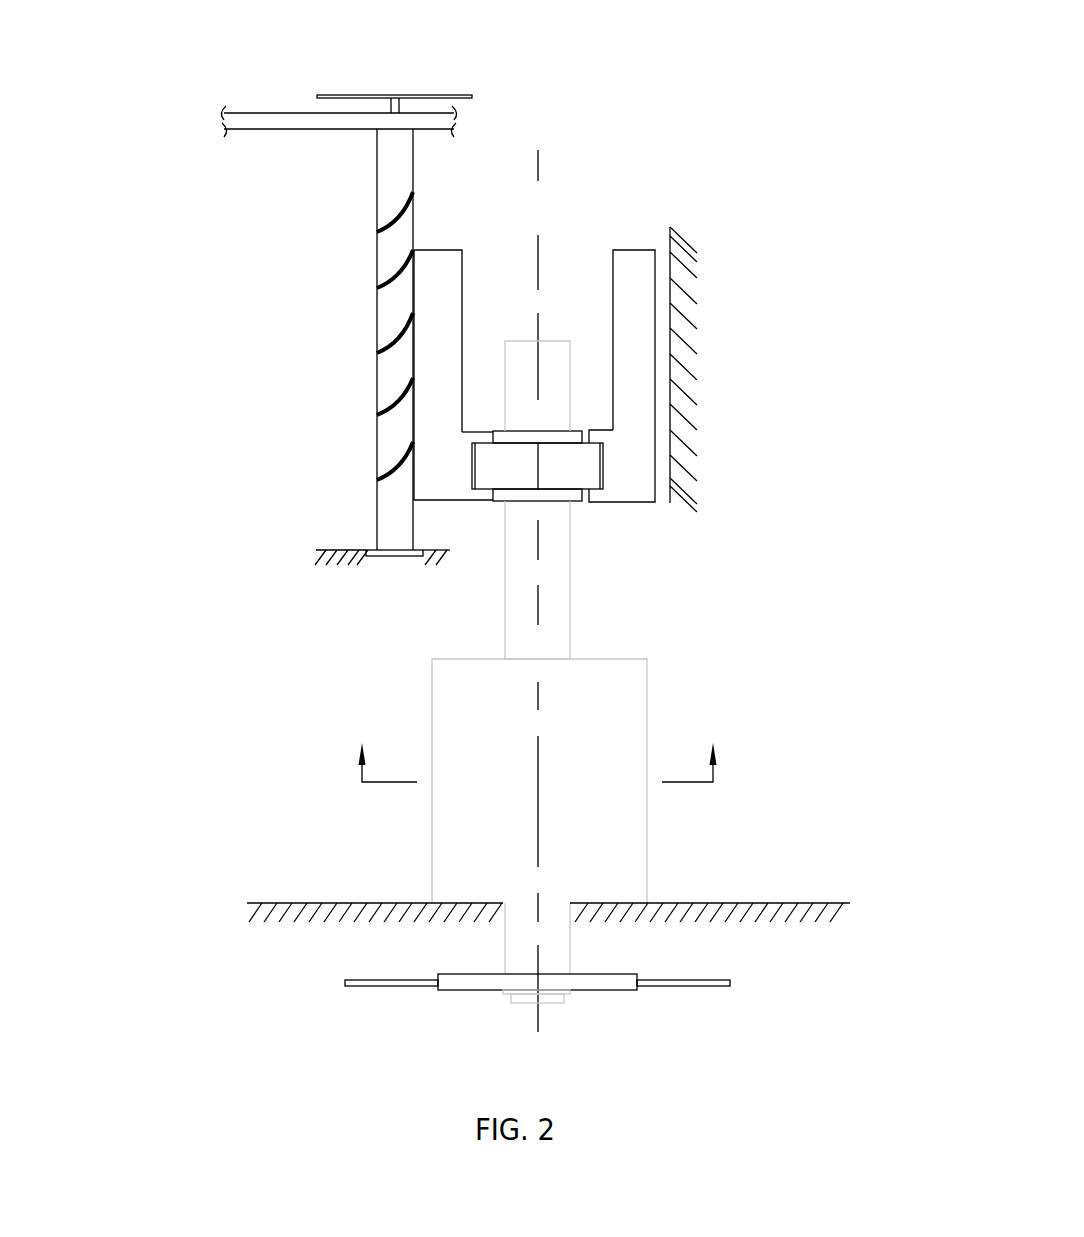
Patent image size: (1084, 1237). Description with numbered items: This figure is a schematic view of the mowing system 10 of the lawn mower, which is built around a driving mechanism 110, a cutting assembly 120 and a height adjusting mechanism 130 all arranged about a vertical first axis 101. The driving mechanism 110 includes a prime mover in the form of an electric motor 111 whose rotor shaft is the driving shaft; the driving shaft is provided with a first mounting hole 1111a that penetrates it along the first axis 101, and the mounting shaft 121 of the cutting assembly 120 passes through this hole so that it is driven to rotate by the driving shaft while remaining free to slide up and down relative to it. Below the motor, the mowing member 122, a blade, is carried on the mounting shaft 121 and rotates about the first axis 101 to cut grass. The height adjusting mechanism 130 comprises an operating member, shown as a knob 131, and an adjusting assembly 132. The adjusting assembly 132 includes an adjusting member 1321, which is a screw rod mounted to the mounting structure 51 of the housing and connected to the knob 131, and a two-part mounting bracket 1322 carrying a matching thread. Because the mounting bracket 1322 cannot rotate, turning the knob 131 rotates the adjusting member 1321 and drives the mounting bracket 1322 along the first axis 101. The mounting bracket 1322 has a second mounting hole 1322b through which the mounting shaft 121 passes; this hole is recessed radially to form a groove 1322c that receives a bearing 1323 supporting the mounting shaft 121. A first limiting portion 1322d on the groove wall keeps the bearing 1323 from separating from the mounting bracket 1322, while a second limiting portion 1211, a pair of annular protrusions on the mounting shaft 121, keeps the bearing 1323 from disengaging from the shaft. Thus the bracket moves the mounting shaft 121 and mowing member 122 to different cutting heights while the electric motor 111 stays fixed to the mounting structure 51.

The mowing system 10 is at (136, 82).
The mounting structure 51 is at (293, 122).
The knob 131 is at (447, 95).
The first axis 101 is at (549, 176).
The height adjusting mechanism 130 is at (628, 242).
The adjusting assembly 132 is at (366, 287).
The adjusting member 1321 is at (383, 237).
The mounting bracket 1322 is at (442, 333).
The second mounting hole 1322b is at (485, 437).
The groove 1322c is at (468, 468).
The first limiting portion 1322d is at (482, 498).
The bearing 1323 is at (587, 462).
The second limiting portion 1211 is at (582, 432).
The mounting shaft 121 is at (528, 632).
The driving mechanism 110 is at (716, 668).
The electric motor 111 is at (638, 815).
The first mounting hole 1111a is at (572, 665).
The cutting assembly 120 is at (833, 990).
The mowing member 122 is at (345, 983).